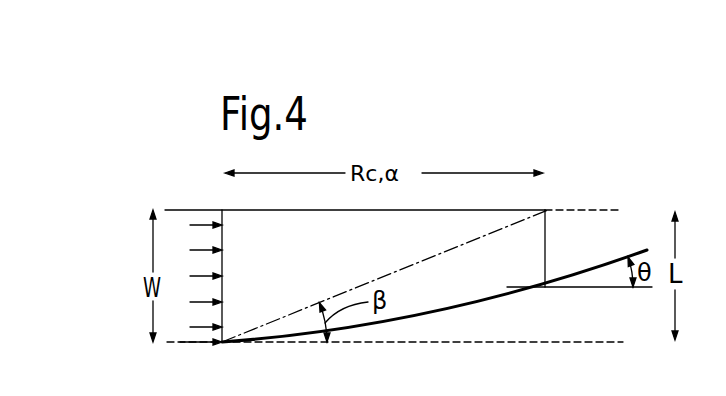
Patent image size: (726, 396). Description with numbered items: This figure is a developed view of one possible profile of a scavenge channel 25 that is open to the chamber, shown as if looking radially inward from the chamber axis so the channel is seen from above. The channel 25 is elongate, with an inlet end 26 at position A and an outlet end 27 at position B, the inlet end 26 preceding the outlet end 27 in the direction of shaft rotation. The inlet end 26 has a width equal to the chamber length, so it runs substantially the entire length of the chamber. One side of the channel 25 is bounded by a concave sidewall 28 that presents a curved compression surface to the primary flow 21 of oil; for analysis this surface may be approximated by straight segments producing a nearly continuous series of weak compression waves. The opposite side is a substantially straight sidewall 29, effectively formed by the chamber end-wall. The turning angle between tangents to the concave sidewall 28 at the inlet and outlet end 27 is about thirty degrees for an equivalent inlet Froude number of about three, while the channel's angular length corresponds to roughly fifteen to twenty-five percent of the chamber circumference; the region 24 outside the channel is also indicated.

The primary flow 21 is at (205, 275).
The flow deflection region 24 is at (572, 250).
The scavenge channel 25 is at (288, 232).
The inlet end 26 is at (223, 288).
The outlet end 27 is at (545, 250).
The concave sidewall 28 is at (412, 317).
The straight sidewall 29 is at (515, 210).